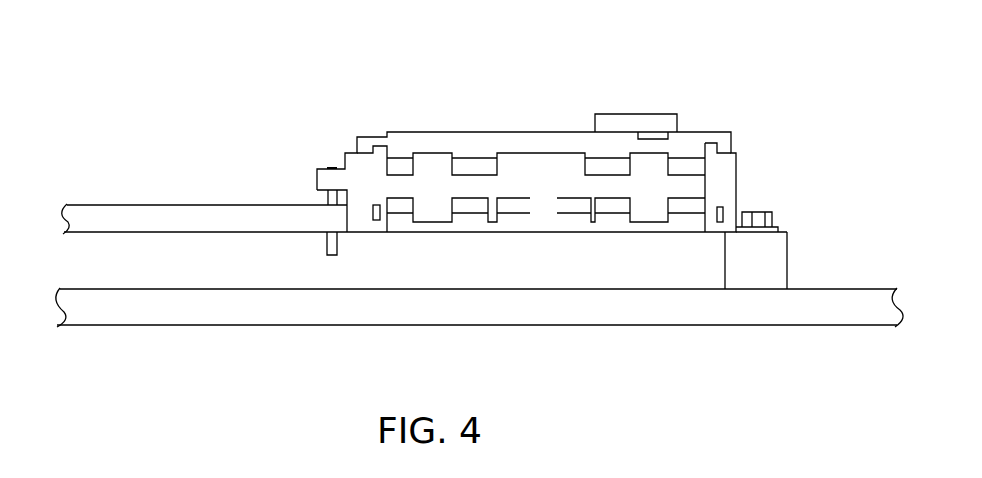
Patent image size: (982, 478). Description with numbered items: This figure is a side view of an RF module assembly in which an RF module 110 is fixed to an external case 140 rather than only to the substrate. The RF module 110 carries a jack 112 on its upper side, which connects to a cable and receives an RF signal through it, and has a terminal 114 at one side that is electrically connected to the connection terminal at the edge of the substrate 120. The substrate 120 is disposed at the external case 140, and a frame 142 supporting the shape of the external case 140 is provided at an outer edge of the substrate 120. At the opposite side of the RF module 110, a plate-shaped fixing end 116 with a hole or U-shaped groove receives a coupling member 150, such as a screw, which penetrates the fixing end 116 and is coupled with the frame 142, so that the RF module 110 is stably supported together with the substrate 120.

The RF module 110 is at (712, 143).
The jack 112 is at (634, 125).
The terminal 114 is at (330, 195).
The fixing end 116 is at (777, 227).
The substrate 120 is at (197, 218).
The external case 140 is at (717, 312).
The frame 142 is at (780, 255).
The coupling member 150 is at (752, 212).